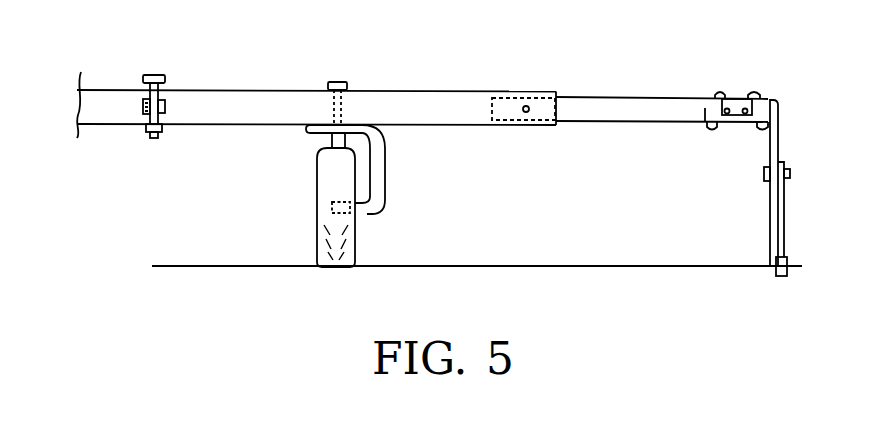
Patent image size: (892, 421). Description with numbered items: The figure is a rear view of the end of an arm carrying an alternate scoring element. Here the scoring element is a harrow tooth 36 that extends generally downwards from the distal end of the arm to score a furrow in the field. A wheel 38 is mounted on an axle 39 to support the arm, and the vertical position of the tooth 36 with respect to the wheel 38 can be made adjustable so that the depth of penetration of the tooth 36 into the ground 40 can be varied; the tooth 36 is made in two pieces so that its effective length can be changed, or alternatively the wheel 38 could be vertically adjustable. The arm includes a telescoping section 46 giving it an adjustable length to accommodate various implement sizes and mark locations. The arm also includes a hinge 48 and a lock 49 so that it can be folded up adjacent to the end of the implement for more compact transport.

The harrow tooth 36 is at (771, 216).
The wheel 38 is at (355, 240).
The axle 39 is at (368, 215).
The ground 40 is at (641, 268).
The telescoping section 46 is at (613, 97).
The hinge 48 is at (167, 90).
The lock 49 is at (143, 106).